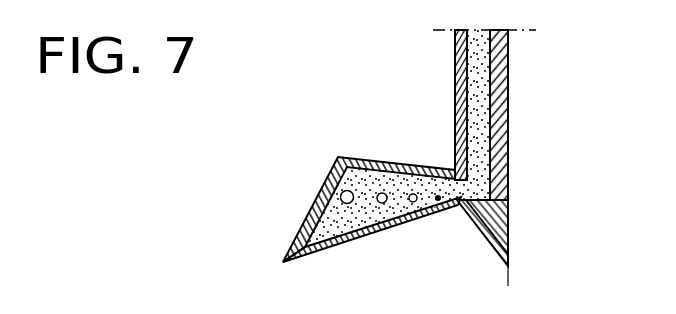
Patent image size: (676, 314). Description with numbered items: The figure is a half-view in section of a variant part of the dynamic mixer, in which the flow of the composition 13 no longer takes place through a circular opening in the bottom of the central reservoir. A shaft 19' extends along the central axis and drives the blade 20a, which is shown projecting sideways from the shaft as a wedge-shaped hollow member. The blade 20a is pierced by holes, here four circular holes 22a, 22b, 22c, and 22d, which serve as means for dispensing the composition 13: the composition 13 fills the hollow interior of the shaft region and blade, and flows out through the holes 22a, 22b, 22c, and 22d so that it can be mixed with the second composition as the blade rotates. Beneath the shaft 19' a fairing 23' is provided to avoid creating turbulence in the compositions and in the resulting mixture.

The composition 13 is at (467, 66).
The shaft 19' is at (545, 115).
The blade 20a is at (298, 228).
The circular hole 22a is at (438, 195).
The circular hole 22b is at (416, 202).
The circular hole 22c is at (382, 193).
The circular hole 22d is at (323, 184).
The fairing 23' is at (530, 233).